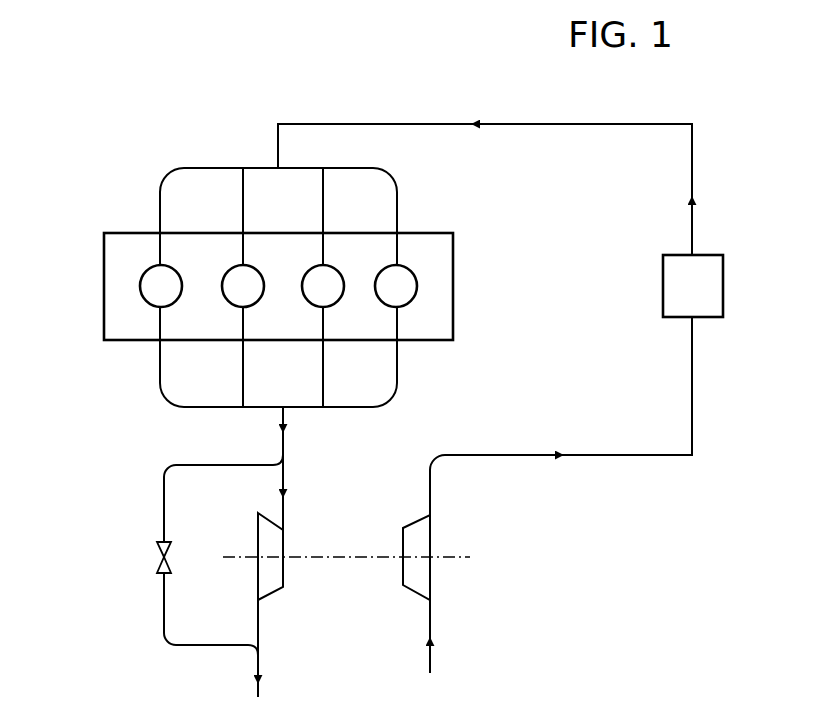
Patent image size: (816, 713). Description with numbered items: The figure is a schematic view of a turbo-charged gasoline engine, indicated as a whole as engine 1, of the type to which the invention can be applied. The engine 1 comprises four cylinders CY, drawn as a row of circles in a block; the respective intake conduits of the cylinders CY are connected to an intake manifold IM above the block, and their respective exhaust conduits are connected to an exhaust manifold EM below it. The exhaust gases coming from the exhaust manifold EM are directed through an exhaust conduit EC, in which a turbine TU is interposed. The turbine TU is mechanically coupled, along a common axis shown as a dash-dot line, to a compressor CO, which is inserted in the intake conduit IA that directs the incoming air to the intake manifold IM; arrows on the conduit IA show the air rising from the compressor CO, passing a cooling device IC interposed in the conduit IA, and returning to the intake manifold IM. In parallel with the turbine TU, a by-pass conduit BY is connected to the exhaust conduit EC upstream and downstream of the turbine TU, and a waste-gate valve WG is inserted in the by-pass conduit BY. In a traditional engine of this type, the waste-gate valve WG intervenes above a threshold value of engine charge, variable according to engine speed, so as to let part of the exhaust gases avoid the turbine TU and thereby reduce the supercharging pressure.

The turbo-charged gasoline engine 1 is at (158, 137).
The intake manifold IM is at (253, 165).
The exhaust manifold EM is at (370, 411).
The cylinder CY is at (411, 277).
The intake conduit IA is at (460, 122).
The cooling device IC is at (663, 288).
The exhaust conduit EC is at (287, 450).
The by-pass conduit BY is at (163, 507).
The waste-gate valve WG is at (134, 558).
The turbine TU is at (270, 583).
The compressor CO is at (420, 582).